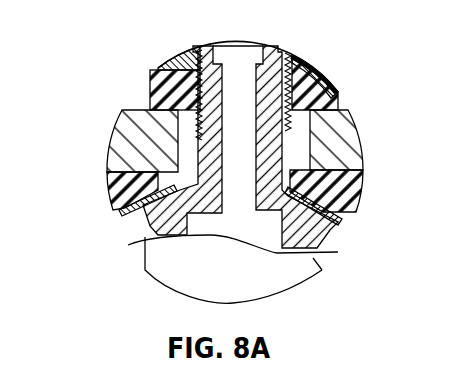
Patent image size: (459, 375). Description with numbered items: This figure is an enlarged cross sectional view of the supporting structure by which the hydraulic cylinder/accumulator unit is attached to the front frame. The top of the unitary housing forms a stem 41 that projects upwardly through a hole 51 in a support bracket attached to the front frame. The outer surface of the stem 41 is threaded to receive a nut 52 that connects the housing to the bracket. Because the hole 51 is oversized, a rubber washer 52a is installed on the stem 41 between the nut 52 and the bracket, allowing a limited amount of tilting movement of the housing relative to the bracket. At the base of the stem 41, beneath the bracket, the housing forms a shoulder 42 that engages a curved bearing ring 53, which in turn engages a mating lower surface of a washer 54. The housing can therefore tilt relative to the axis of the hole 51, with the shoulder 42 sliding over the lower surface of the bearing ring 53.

The stem 41 is at (327, 82).
The shoulder 42 is at (346, 217).
The hole 51 is at (297, 138).
The nut 52 is at (182, 57).
The rubber washer 52a is at (332, 85).
The curved bearing ring 53 is at (134, 215).
The washer 54 is at (107, 192).